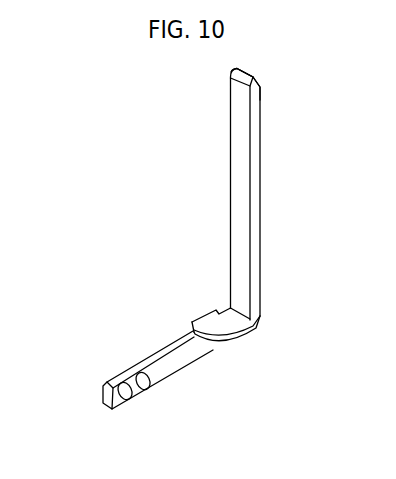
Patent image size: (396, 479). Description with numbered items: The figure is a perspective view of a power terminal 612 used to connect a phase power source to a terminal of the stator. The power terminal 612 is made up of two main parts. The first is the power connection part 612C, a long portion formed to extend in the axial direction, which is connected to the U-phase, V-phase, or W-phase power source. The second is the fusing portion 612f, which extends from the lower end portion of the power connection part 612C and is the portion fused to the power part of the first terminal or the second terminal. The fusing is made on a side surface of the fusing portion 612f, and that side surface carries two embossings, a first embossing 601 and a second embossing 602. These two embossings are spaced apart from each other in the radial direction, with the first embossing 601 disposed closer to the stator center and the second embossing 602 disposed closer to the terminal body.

The power terminal 612 is at (212, 221).
The power connection part 612C is at (243, 109).
The fusing portion 612f is at (127, 367).
The first embossing 601 is at (128, 403).
The second embossing 602 is at (150, 386).